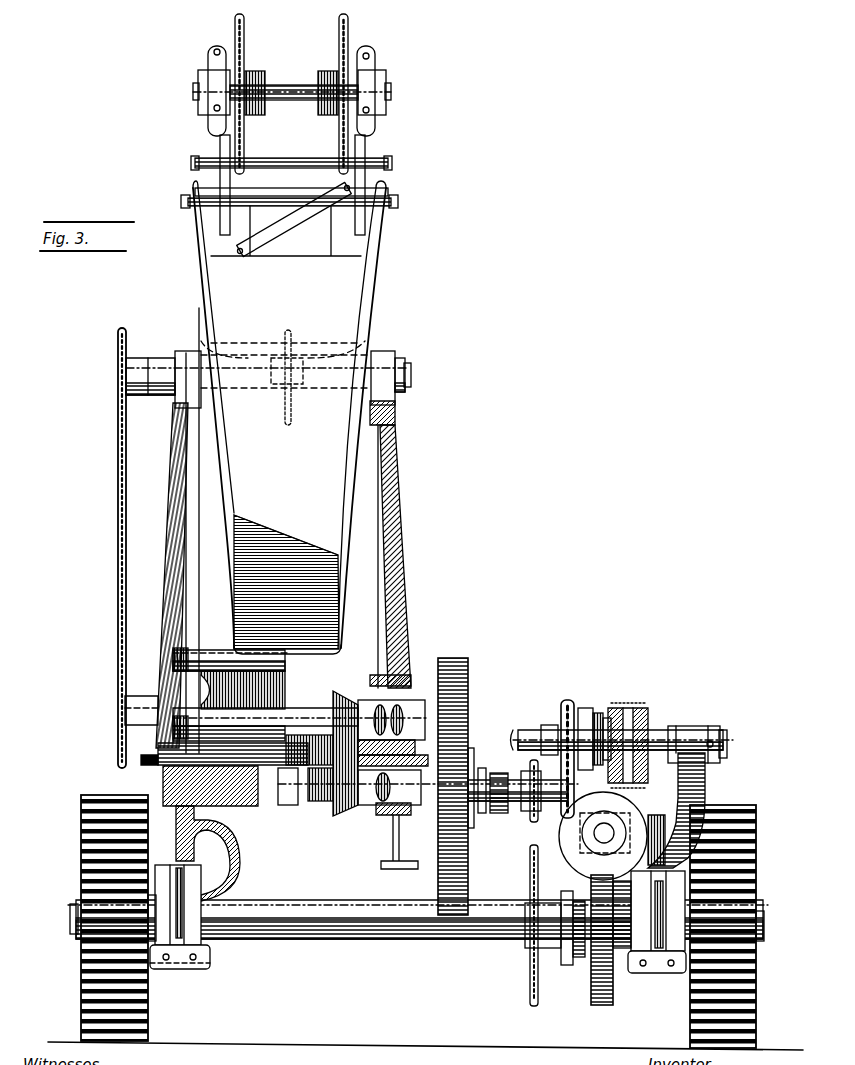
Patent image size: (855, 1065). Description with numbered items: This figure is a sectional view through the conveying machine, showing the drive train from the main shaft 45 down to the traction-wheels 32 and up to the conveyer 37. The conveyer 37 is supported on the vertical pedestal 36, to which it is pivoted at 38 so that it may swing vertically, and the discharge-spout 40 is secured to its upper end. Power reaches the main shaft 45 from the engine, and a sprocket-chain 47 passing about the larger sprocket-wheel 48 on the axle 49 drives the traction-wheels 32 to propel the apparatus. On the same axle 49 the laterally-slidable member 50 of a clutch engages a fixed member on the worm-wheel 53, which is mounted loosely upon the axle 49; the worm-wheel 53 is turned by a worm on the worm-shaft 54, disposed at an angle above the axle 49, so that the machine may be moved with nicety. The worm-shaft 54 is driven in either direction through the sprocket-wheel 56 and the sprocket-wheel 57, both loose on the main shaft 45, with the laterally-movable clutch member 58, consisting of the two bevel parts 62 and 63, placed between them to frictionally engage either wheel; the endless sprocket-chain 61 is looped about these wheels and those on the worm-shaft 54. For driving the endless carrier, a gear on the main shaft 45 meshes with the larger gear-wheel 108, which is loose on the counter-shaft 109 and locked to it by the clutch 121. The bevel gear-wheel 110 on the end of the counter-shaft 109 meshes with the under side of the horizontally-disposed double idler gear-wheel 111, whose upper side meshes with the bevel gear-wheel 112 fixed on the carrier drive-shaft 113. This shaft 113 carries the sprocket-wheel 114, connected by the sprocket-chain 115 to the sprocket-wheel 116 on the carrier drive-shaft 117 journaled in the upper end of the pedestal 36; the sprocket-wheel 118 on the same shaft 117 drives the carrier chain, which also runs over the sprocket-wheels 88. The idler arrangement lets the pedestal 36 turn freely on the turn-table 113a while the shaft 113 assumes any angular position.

The sprocket-wheels 88 is at (332, 23).
The conveyer 37 is at (196, 130).
The discharge-spout 40 is at (289, 417).
The vertical pedestal 36 is at (164, 564).
The sprocket-chain 115 is at (110, 625).
The sprocket-wheel 116 is at (110, 364).
The carrier drive-shaft 117 is at (390, 356).
The pivot 38 is at (403, 366).
The sprocket-wheel 118 is at (276, 398).
The carrier drive-shaft 113 is at (276, 700).
The double idler gear-wheel 111 is at (302, 718).
The bevel gear-wheel 110 is at (330, 805).
The bevel gear-wheel 112 is at (336, 683).
The sprocket-wheel 114 is at (107, 741).
The turn-table 113a is at (400, 743).
The gear-wheel 108 is at (458, 720).
The clutch 121 is at (482, 766).
The counter-shaft 109 is at (510, 796).
The sprocket-chain 47 is at (556, 798).
The main shaft 45 is at (516, 726).
The sprocket-wheel 57 is at (552, 704).
The endless sprocket-chain 61 is at (575, 698).
The bevel part 62 is at (590, 705).
The clutch member 58 is at (600, 710).
The bevel part 63 is at (618, 702).
The sprocket-wheel 56 is at (648, 710).
The worm-shaft 54 is at (596, 825).
The axle 49 is at (292, 905).
The traction-wheels 32 is at (150, 988).
The sprocket-wheel 48 is at (520, 963).
The laterally-slidable clutch member 50 is at (568, 955).
The worm-wheel 53 is at (605, 967).